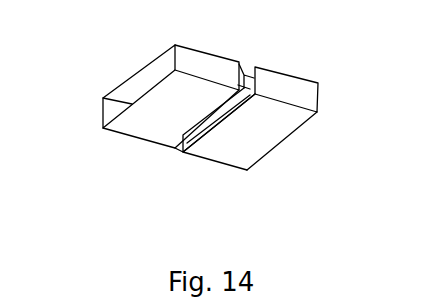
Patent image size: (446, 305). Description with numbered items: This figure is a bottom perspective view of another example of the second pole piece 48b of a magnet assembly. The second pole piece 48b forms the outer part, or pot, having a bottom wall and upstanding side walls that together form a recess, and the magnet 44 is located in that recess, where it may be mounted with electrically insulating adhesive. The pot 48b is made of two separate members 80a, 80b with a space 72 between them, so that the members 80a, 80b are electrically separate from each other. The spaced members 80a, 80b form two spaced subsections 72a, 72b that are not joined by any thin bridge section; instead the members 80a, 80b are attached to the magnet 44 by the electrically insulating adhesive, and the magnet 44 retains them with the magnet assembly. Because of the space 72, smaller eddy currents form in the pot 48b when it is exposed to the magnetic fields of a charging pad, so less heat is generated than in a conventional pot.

The separate member 80a is at (132, 104).
The spaced subsection 72a is at (168, 102).
The magnet 44 is at (200, 117).
The space 72 is at (250, 70).
The second pole piece 48b is at (310, 97).
The separate member 80b is at (267, 130).
The spaced subsection 72b is at (233, 155).